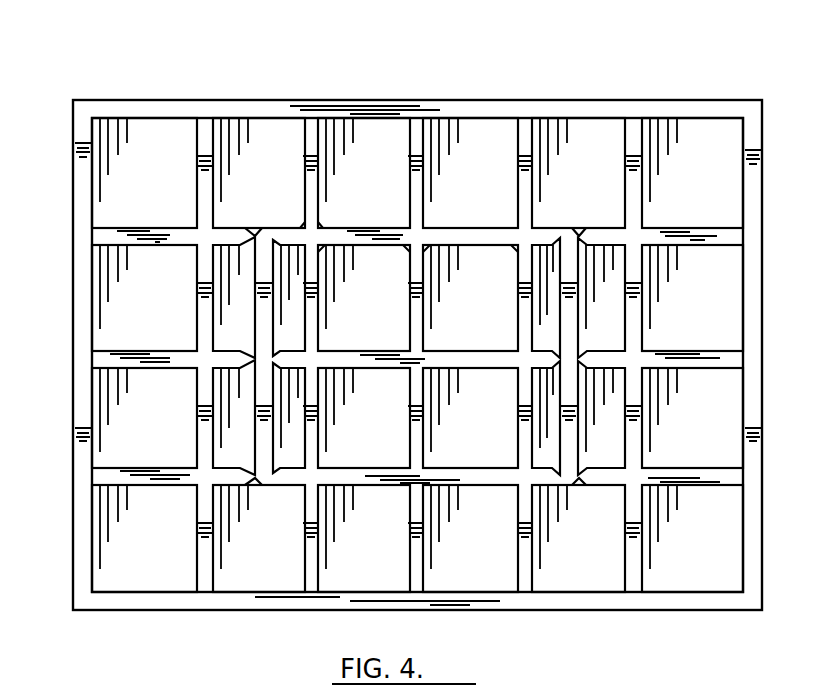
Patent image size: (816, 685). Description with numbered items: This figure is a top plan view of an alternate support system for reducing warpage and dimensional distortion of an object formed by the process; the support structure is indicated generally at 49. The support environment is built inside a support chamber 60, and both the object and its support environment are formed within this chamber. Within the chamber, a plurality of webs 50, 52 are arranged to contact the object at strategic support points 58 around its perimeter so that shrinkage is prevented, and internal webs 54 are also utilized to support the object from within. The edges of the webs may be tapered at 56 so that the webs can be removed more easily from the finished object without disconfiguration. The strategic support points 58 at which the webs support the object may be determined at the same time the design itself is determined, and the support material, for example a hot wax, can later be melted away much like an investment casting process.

The honeycomb cell structure 49 is at (268, 138).
The webs 50 is at (322, 162).
The webs 52 is at (180, 348).
The internal webs 54 is at (428, 322).
The tapered edges of the webs 56 is at (322, 220).
The strategic support points 58 is at (410, 250).
The support chamber 60 is at (73, 330).